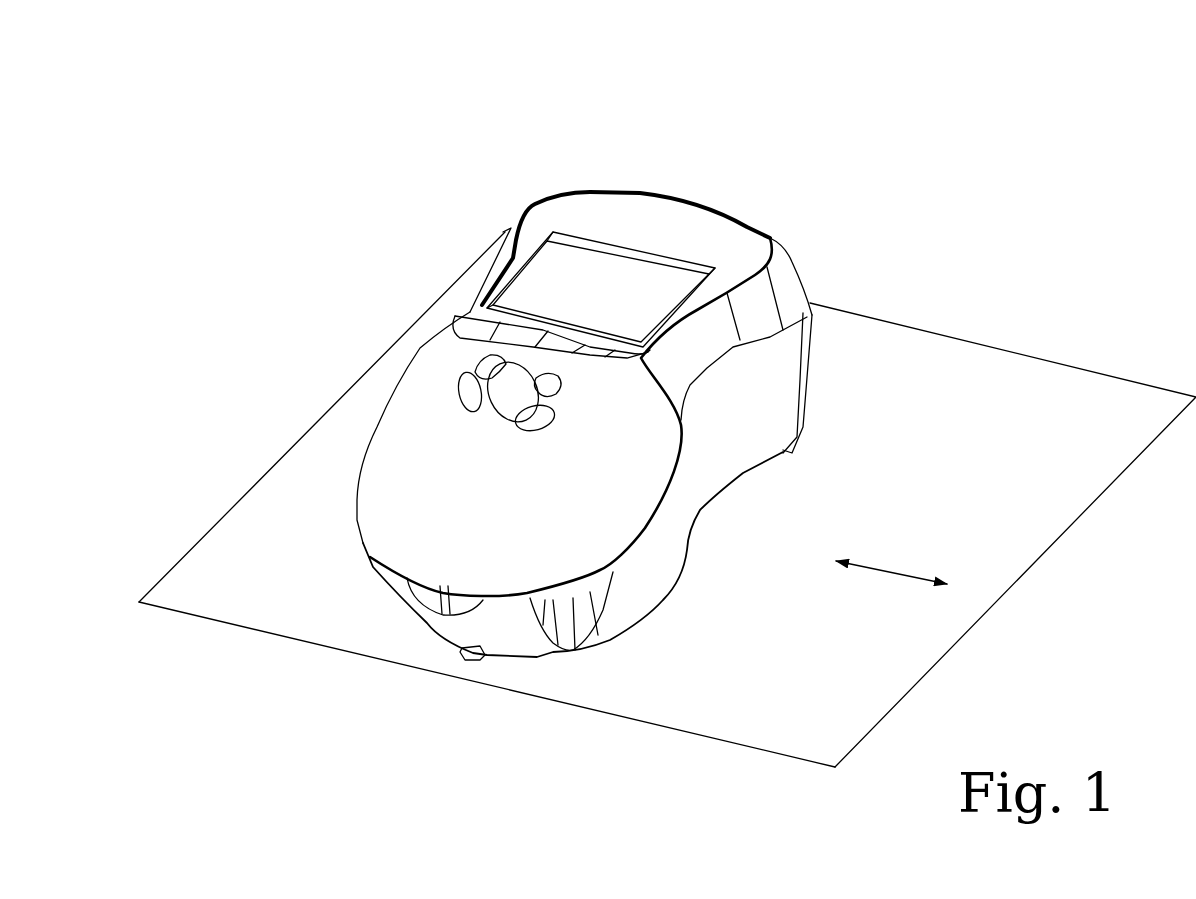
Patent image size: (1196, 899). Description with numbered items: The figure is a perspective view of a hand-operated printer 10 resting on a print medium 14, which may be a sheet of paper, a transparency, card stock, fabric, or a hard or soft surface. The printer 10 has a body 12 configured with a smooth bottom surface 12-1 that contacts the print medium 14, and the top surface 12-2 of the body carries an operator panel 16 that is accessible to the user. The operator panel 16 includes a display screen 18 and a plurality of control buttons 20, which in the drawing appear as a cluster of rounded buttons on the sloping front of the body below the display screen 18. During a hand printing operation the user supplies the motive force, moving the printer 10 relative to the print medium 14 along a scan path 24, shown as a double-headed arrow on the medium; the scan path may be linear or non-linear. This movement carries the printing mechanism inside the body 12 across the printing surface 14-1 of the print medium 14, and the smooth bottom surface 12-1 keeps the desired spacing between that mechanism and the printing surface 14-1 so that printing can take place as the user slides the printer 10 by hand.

The hand-operated printer 10 is at (655, 363).
The body 12 is at (655, 380).
The smooth bottom surface 12-1 is at (641, 632).
The top surface 12-2 is at (620, 218).
The print medium 14 is at (667, 455).
The printing surface 14-1 is at (1070, 407).
The operator panel 16 is at (372, 248).
The display screen 18 is at (489, 268).
The control buttons 20 is at (438, 369).
The scan path 24 is at (903, 573).